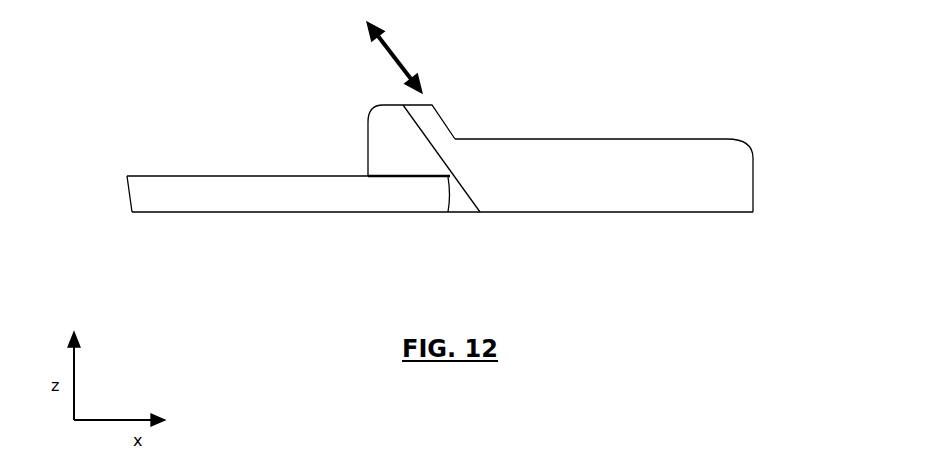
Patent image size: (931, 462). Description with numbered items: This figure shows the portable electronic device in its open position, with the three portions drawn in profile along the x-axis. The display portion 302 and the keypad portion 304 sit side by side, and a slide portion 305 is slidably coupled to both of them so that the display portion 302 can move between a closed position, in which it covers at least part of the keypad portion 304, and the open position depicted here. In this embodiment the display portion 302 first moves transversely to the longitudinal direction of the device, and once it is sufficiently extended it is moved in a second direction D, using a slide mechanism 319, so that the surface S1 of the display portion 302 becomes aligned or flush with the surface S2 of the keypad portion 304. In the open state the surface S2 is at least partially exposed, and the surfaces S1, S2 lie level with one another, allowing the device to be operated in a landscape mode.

The display portion 302 is at (145, 195).
The keypad portion 304 is at (667, 163).
The slide portion 305 is at (378, 126).
The slide mechanism 319 is at (437, 120).
The second direction D is at (404, 62).
The surface of the display portion S1 is at (289, 213).
The surface of the keypad portion S2 is at (644, 213).